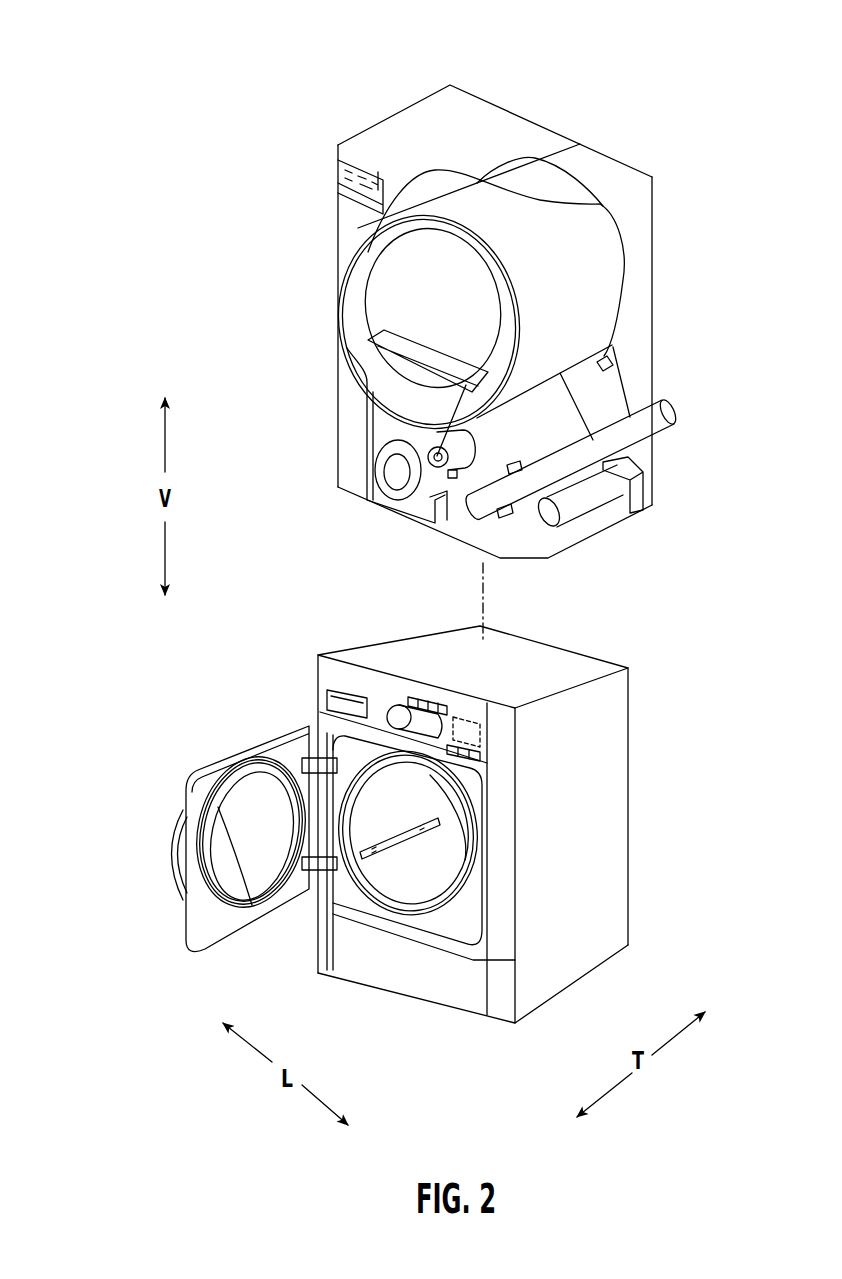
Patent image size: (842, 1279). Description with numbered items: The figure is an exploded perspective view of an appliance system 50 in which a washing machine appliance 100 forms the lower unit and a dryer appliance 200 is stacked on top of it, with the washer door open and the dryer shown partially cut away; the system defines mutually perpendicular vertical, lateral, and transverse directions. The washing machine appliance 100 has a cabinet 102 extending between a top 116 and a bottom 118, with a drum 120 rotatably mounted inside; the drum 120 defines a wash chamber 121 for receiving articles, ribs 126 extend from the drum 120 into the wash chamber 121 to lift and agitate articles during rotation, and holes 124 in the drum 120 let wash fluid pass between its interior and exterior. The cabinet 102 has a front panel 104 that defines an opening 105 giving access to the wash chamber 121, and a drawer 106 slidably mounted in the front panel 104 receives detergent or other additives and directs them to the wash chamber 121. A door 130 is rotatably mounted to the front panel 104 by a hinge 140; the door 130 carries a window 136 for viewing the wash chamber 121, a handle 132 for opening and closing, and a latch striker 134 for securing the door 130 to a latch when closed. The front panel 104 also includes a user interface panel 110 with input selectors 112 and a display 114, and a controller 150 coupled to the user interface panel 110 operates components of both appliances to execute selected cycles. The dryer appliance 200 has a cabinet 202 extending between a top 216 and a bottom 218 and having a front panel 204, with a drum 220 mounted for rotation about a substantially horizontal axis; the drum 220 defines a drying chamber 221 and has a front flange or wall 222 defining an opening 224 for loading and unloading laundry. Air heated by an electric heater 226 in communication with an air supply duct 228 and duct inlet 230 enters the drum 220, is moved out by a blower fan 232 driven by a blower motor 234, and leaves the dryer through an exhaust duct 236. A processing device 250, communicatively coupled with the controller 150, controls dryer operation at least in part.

The appliance system 50 is at (173, 63).
The dryer appliance 200 is at (427, 37).
The cabinet 202 is at (653, 267).
The front panel 204 is at (340, 207).
The top 216 is at (670, 173).
The bottom 218 is at (682, 496).
The drum 220 is at (534, 281).
The drying chamber 221 is at (395, 314).
The front flange or wall 222 is at (373, 243).
The opening 224 is at (360, 289).
The electric heater 226 is at (647, 507).
The air supply duct 228 is at (578, 503).
The duct inlet 230 is at (540, 523).
The blower fan 232 is at (385, 493).
The blower motor 234 is at (435, 430).
The exhaust duct 236 is at (466, 516).
The processing device 250 is at (333, 168).
The washing machine appliance 100 is at (313, 588).
The cabinet 102 is at (632, 862).
The front panel 104 is at (505, 931).
The opening 105 is at (392, 913).
The drawer 106 is at (332, 673).
The user interface panel 110 is at (473, 717).
The input selectors 112 is at (430, 686).
The display 114 is at (439, 722).
The top 116 is at (640, 677).
The bottom 118 is at (644, 943).
The drum 120 is at (428, 890).
The wash chamber 121 is at (375, 877).
The holes 124 is at (351, 873).
The ribs 126 is at (392, 830).
The door 130 is at (307, 873).
The handle 132 is at (168, 893).
The latch striker 134 is at (197, 866).
The window 136 is at (218, 845).
The hinge 140 is at (307, 760).
The controller 150 is at (480, 735).